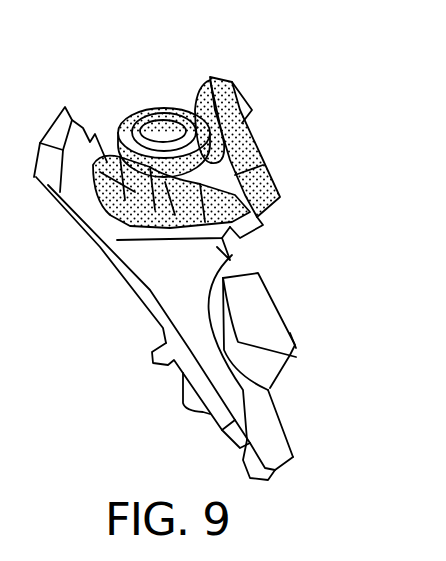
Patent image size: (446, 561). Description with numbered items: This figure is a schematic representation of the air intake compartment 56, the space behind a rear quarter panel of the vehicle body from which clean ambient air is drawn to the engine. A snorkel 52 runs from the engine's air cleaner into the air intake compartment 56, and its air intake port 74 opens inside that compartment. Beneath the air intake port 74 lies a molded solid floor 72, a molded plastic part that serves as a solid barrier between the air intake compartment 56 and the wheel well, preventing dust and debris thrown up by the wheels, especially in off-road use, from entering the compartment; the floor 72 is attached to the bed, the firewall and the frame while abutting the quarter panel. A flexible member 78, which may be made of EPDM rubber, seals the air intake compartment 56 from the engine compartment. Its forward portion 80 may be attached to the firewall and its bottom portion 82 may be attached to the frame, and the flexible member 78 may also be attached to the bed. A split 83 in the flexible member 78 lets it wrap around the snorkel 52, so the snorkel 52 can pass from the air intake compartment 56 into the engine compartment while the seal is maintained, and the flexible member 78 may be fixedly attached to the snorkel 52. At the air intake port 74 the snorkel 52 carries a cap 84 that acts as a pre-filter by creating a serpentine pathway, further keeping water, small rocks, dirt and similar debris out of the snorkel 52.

The snorkel 52 is at (255, 244).
The air intake compartment 56 is at (142, 277).
The molded solid floor 72 is at (190, 262).
The air intake port 74 is at (147, 110).
The flexible member 78 is at (250, 150).
The forward portion 80 is at (252, 178).
The bottom portion 82 is at (262, 230).
The split 83 is at (255, 204).
The cap 84 is at (196, 86).